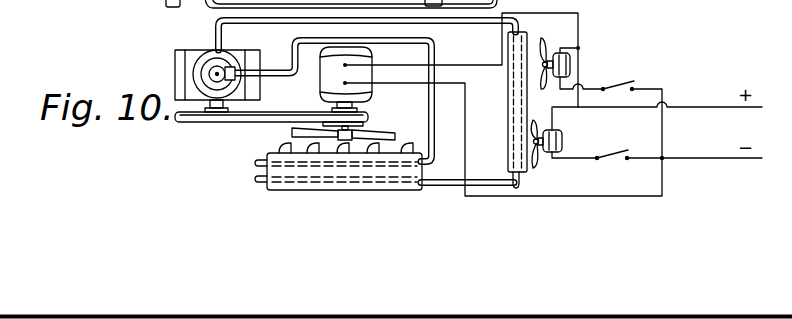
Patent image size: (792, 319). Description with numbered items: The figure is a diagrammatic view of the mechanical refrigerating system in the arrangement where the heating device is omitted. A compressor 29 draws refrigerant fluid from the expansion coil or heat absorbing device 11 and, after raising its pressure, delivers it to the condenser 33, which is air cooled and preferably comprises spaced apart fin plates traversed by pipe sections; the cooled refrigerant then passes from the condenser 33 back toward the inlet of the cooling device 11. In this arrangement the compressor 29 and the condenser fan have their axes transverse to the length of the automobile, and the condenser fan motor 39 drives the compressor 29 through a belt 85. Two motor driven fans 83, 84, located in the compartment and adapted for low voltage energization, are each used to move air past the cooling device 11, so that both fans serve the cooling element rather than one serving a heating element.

The compressor 29 is at (190, 62).
The condenser fan motor 39 is at (327, 75).
The belt 85 is at (282, 122).
The condenser 33 is at (275, 170).
The expansion coil or heat absorbing device 11 is at (508, 122).
The motor driven fan 83 is at (547, 45).
The motor driven fan 84 is at (537, 126).